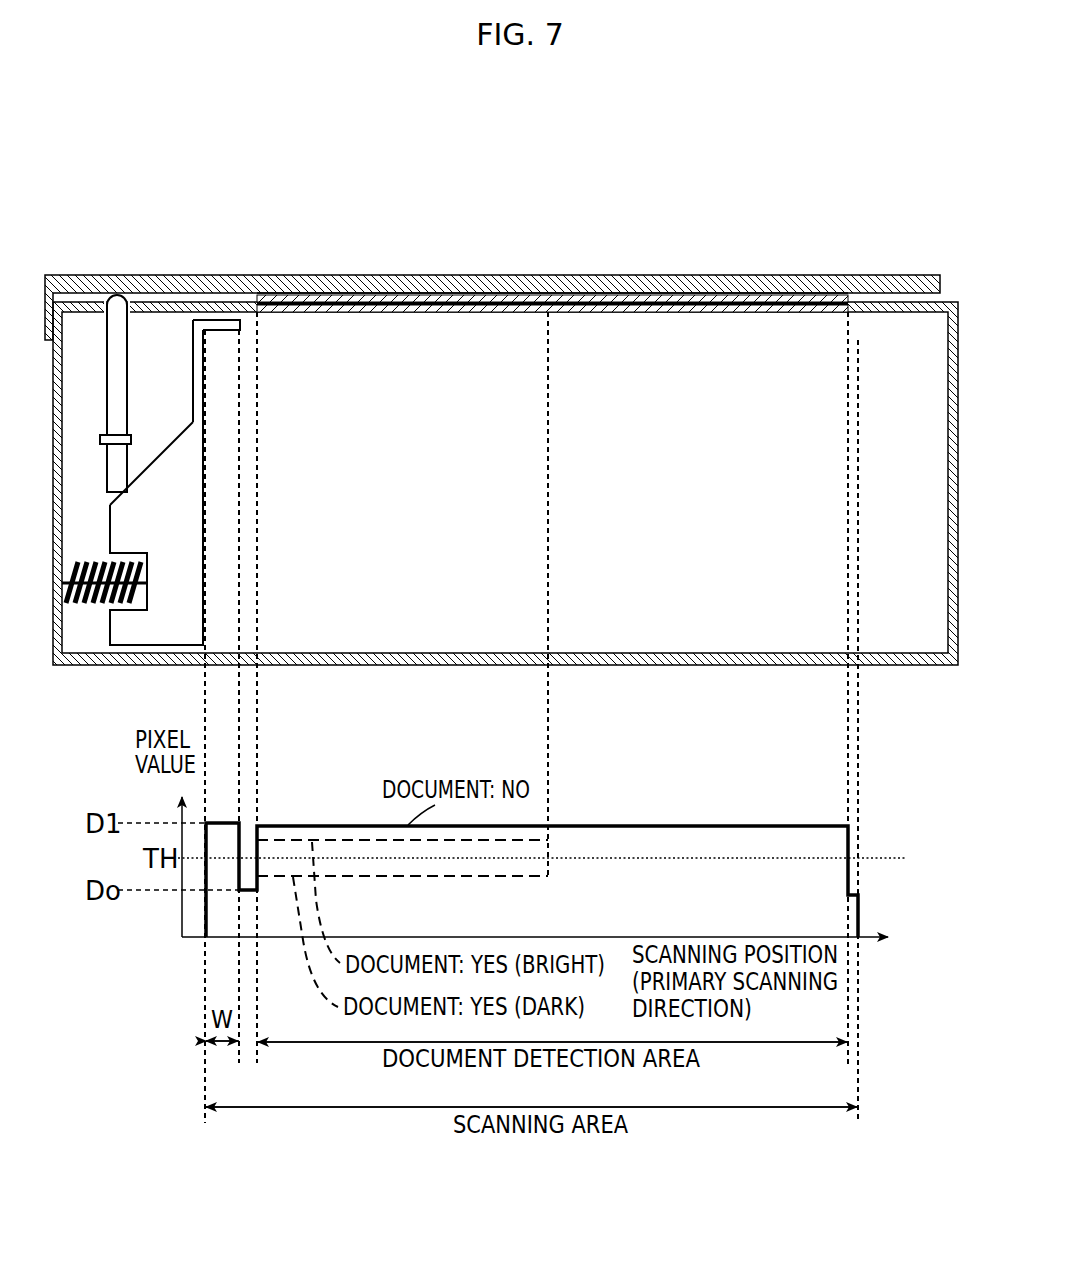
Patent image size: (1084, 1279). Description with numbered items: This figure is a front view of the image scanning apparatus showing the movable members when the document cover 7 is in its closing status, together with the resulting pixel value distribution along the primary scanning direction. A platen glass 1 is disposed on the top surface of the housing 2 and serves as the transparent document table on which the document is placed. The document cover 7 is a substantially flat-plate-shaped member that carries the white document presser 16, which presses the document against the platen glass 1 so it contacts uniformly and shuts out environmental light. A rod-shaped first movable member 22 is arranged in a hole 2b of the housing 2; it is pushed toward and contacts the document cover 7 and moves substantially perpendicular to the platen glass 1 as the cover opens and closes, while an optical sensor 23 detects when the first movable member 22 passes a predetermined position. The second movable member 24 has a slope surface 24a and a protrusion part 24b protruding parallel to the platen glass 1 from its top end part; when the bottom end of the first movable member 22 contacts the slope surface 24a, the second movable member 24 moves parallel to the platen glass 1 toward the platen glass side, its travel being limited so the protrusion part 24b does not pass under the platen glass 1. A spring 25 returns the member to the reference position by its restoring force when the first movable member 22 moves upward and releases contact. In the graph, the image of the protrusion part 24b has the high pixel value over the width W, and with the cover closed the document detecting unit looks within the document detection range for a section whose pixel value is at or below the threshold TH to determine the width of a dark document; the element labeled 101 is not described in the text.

The platen glass 1 is at (800, 312).
The housing 2 is at (902, 312).
The hole 2b is at (101, 317).
The document cover 7 is at (905, 289).
The white document presser 16 is at (757, 290).
The first movable member 22 is at (118, 362).
The optical sensor 23 is at (105, 438).
The second movable member 24 is at (181, 456).
The slope surface 24a is at (158, 462).
The protrusion part 24b is at (228, 325).
The spring 25 is at (107, 562).
The platen glass 101 is at (523, 302).